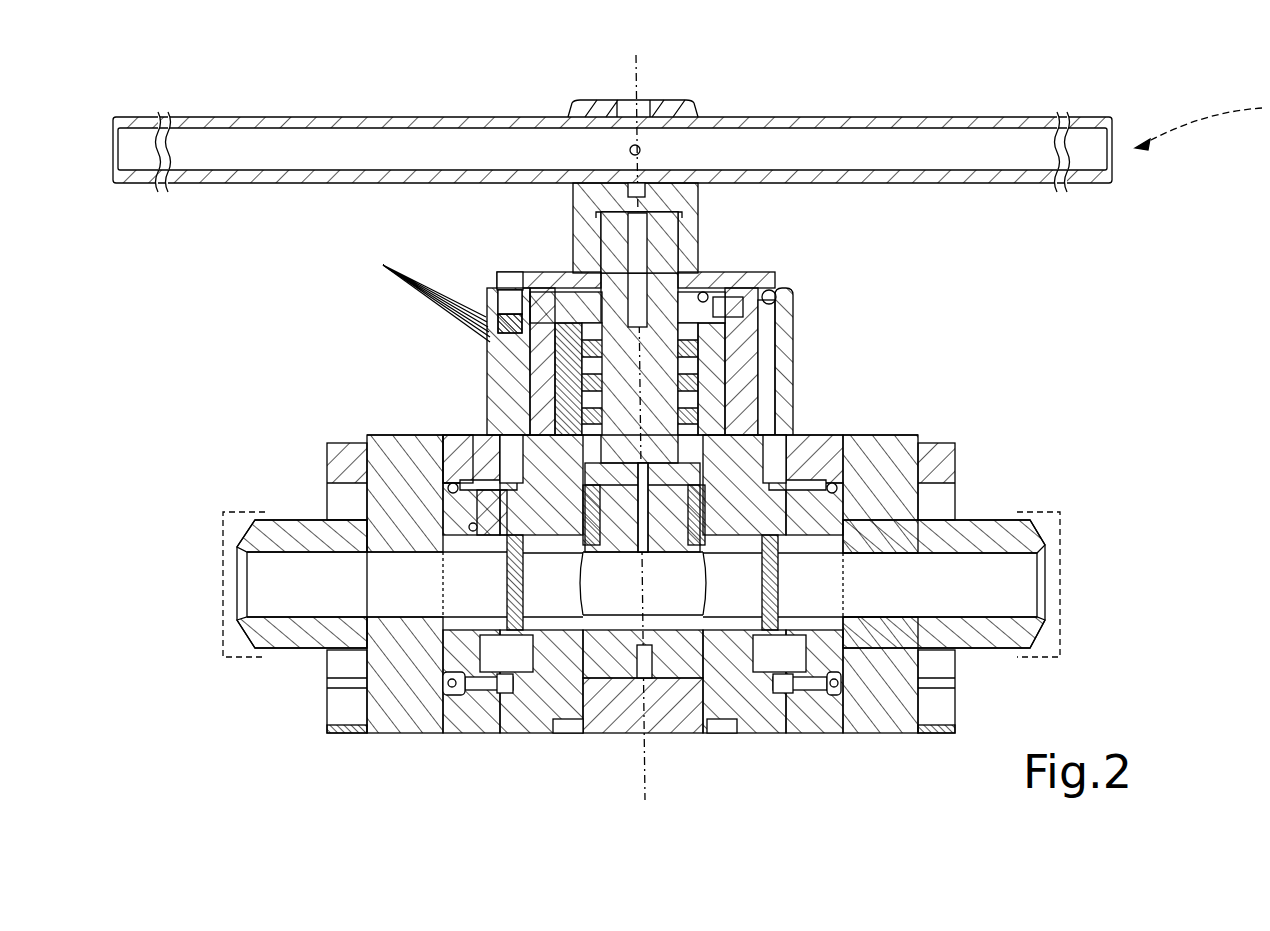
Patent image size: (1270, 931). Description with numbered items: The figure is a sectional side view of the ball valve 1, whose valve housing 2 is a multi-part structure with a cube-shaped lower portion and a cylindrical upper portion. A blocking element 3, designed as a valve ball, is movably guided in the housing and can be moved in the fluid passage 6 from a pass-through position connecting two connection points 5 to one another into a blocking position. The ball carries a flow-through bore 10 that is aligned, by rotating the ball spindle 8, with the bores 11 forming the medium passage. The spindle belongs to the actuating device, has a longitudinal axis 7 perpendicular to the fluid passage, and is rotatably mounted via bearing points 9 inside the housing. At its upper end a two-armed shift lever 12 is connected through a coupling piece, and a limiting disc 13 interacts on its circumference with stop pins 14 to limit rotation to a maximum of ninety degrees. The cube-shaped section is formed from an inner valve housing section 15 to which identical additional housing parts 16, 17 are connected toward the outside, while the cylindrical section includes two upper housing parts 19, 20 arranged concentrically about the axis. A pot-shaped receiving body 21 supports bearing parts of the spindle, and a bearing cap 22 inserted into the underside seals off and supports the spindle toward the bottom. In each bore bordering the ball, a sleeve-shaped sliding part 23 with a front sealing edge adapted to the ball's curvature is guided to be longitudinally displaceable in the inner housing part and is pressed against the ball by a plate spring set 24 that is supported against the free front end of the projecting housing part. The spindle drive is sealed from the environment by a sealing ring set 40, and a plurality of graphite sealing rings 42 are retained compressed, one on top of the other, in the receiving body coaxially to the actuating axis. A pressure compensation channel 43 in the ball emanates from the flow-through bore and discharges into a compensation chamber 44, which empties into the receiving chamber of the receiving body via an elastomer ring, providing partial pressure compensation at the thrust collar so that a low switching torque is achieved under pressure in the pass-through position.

The ball valve 1 is at (808, 343).
The valve housing 2 is at (925, 422).
The blocking element 3 is at (603, 700).
The connection points 5 is at (297, 520).
The fluid passage 6 is at (922, 601).
The longitudinal axis 7 is at (643, 73).
The ball spindle 8 is at (700, 228).
The bearing points 9 is at (567, 270).
The flow-through bore 10 is at (684, 601).
The bores 11 is at (309, 601).
The shift lever 12 is at (862, 117).
The limiting disc 13 is at (727, 283).
The stop pins 14 is at (493, 272).
The inner valve housing section 15 is at (505, 720).
The additional housing part 16 is at (470, 700).
The additional housing part 17 is at (1030, 520).
The upper housing part 19 is at (530, 272).
The upper housing part 20 is at (487, 370).
The pot-shaped receiving body 21 is at (793, 300).
The bearing cap 22 is at (657, 700).
The sliding part 23 is at (397, 430).
The plate spring set 24 is at (525, 580).
The sealing ring set 40 is at (400, 295).
The sealing ring of the third type 42 is at (488, 345).
The pressure compensation channel 43 is at (633, 700).
The compensation chamber 44 is at (757, 407).